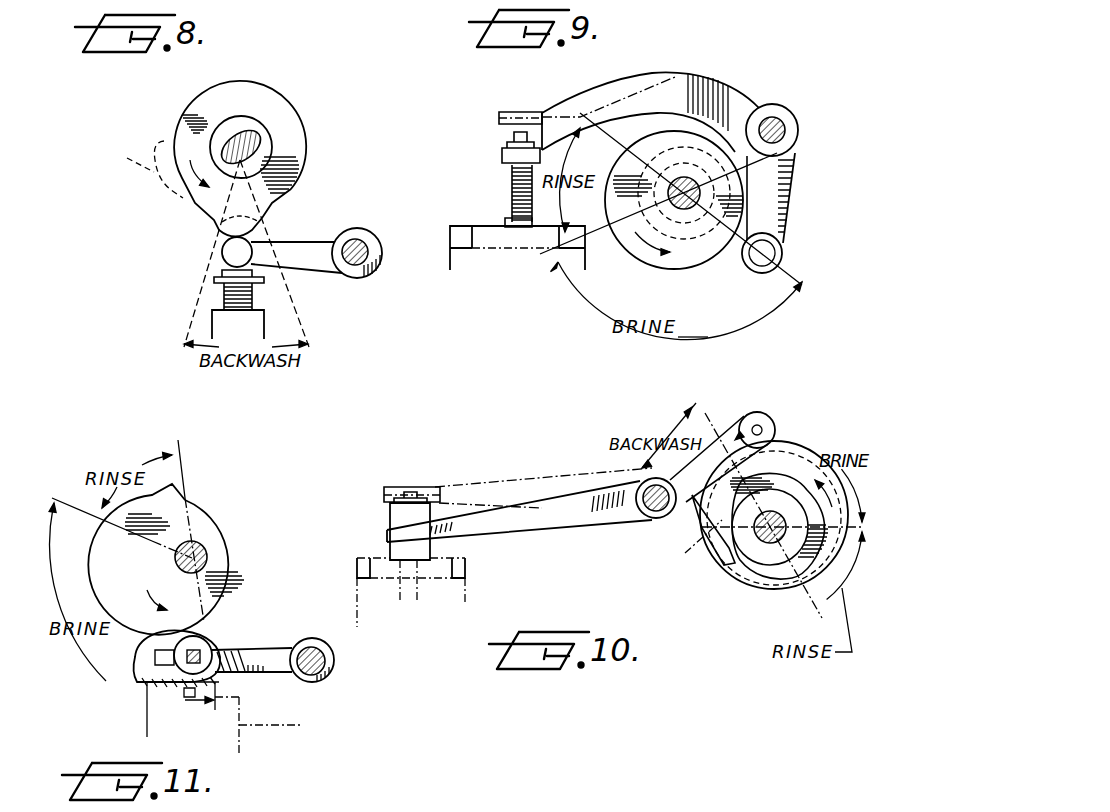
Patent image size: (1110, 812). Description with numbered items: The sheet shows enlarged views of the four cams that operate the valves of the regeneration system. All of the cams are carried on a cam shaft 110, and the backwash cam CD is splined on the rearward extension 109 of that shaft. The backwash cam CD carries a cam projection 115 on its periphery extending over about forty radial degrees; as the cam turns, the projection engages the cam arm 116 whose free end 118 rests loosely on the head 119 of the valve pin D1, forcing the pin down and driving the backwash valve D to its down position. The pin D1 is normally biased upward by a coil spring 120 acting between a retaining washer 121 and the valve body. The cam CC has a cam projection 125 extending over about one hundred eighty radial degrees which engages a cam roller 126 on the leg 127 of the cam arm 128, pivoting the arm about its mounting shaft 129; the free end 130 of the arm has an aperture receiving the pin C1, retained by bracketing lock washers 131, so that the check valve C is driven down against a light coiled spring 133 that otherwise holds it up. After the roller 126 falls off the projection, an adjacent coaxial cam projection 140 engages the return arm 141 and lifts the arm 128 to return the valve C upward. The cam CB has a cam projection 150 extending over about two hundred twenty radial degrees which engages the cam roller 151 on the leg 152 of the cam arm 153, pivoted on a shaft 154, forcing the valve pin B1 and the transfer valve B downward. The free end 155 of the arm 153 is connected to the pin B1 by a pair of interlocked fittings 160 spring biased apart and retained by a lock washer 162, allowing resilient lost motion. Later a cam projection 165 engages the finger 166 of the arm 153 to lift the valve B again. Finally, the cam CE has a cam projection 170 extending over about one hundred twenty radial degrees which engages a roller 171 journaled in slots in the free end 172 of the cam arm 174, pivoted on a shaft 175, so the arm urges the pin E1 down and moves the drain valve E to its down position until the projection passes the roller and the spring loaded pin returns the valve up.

In FIG. 8, the rearward extension 109 is at (241, 134).
In FIG. 9, the cam shaft 110 is at (775, 159).
In FIG. 10, the cam shaft 110 is at (728, 573).
In FIG. 11, the cam shaft 110 is at (197, 540).
In FIG. 8, the cam projection 115 is at (152, 173).
In FIG. 8, the cam arm 116 is at (308, 250).
In FIG. 8, the free end 118 is at (222, 252).
In FIG. 8, the head 119 is at (220, 270).
In FIG. 8, the coil spring 120 is at (262, 310).
In FIG. 8, the retaining washer 121 is at (252, 298).
In FIG. 9, the cam projection 125 is at (722, 262).
In FIG. 9, the cam roller 126 is at (781, 245).
In FIG. 9, the leg 127 is at (785, 204).
In FIG. 9, the cam arm 128 is at (600, 96).
In FIG. 9, the mounting shaft 129 is at (794, 123).
In FIG. 9, the free end 130 is at (501, 157).
In FIG. 9, the lock washers 131 is at (497, 133).
In FIG. 9, the coiled spring 133 is at (507, 185).
In FIG. 9, the cam projection 140 is at (622, 210).
In FIG. 9, the return arm 141 is at (725, 142).
In FIG. 10, the cam projection 150 is at (800, 448).
In FIG. 10, the cam roller 151 is at (772, 425).
In FIG. 10, the leg 152 is at (720, 419).
In FIG. 10, the cam arm 153 is at (547, 480).
In FIG. 10, the shaft 154 is at (650, 520).
In FIG. 10, the free end 155 is at (385, 536).
In FIG. 10, the fittings 160 is at (387, 517).
In FIG. 10, the lock washer 162 is at (420, 500).
In FIG. 10, the cam projection 165 is at (807, 597).
In FIG. 10, the finger 166 is at (698, 548).
In FIG. 11, the cam projection 170 is at (116, 566).
In FIG. 11, the roller 171 is at (200, 640).
In FIG. 11, the free end 172 is at (135, 682).
In FIG. 11, the cam arm 174 is at (258, 673).
In FIG. 8, the shaft 175 is at (372, 269).
In FIG. 11, the shaft 175 is at (318, 647).
In FIG. 8, the backwash cam CD is at (292, 117).
In FIG. 8, the backwash valve D is at (245, 338).
In FIG. 8, the valve pin D1 is at (228, 291).
In FIG. 9, the cam CC is at (651, 263).
In FIG. 9, the check valve C is at (524, 281).
In FIG. 9, the valve pin C1 is at (503, 222).
In FIG. 10, the cam CB is at (752, 588).
In FIG. 10, the transfer valve B is at (413, 623).
In FIG. 10, the valve pin B1 is at (408, 497).
In FIG. 11, the cam CE is at (238, 535).
In FIG. 11, the drain valve E is at (196, 740).
In FIG. 11, the pin E1 is at (160, 703).